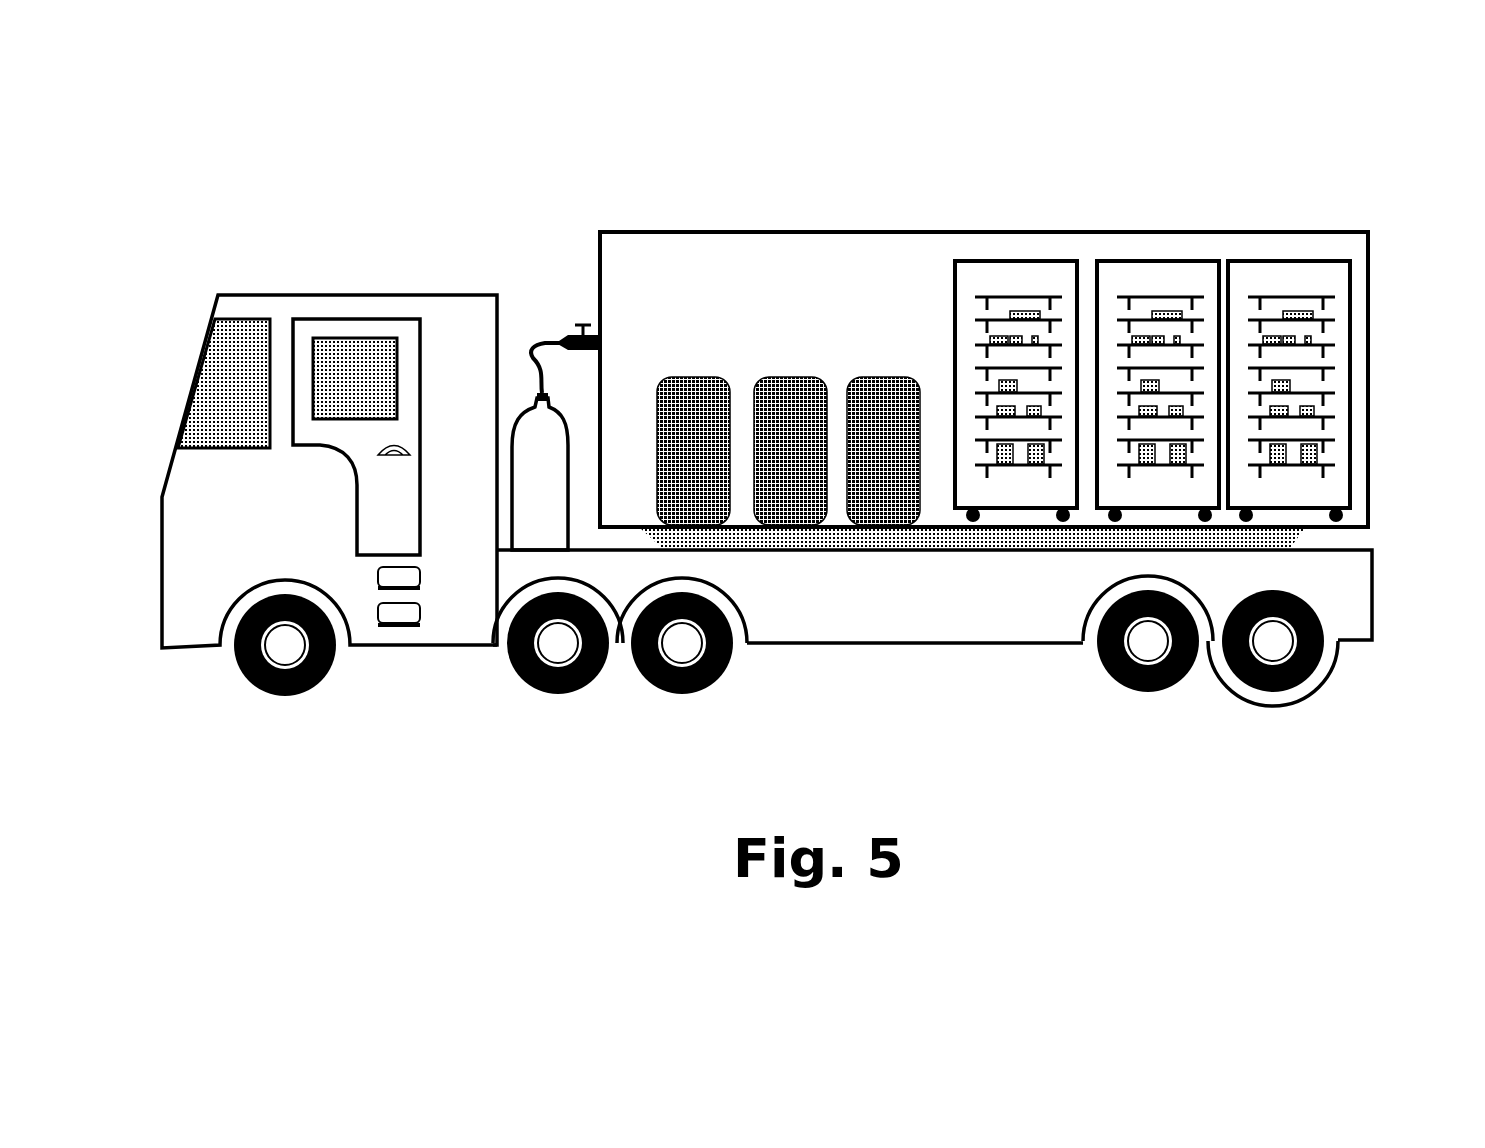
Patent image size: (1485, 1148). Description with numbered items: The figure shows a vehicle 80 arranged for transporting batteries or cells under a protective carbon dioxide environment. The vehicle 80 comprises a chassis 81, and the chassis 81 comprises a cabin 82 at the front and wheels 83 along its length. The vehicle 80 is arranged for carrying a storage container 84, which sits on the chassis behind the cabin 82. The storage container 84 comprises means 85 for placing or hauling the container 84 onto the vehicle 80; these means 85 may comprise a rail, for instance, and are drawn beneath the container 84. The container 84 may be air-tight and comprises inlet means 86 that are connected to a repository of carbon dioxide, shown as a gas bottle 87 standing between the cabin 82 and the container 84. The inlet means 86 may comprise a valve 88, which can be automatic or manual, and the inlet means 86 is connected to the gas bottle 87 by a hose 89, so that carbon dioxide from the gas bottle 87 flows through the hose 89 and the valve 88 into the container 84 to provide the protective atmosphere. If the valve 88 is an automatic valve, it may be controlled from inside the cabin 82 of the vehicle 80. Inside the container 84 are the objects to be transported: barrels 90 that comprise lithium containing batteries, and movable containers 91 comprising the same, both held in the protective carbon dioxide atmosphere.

The vehicle 80 is at (137, 257).
The chassis 81 is at (950, 642).
The cabin 82 is at (370, 295).
The wheels 83 is at (322, 678).
The storage container 84 is at (935, 232).
The means for placing or hauling 85 is at (1300, 530).
The inlet means 86 is at (560, 338).
The gas bottle 87 is at (562, 425).
The valve 88 is at (583, 325).
The hose 89 is at (528, 333).
The barrels 90 is at (700, 377).
The movable containers 91 is at (1253, 262).